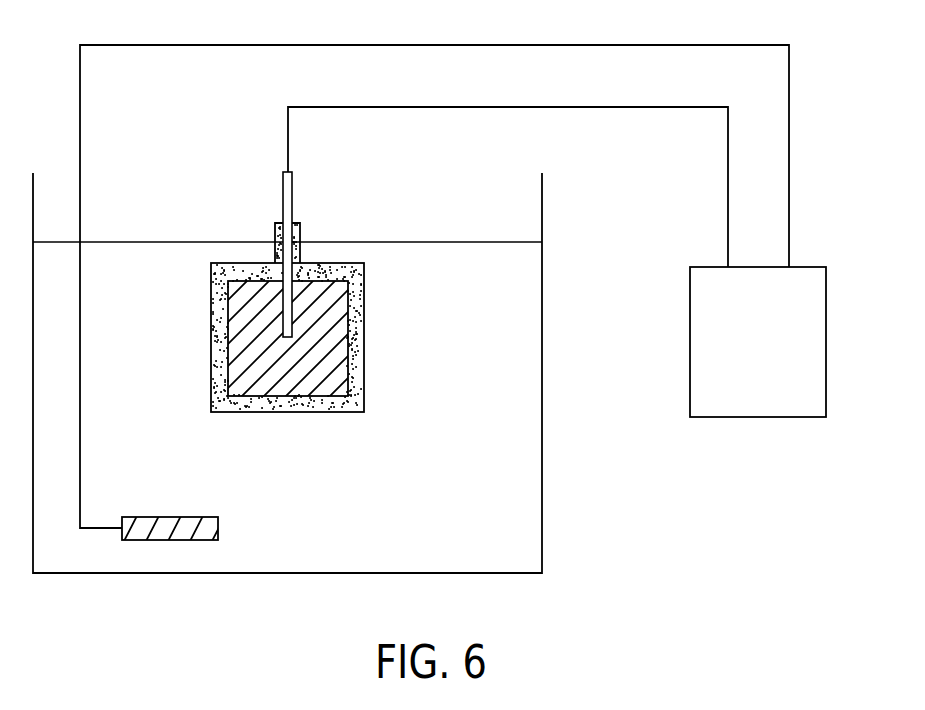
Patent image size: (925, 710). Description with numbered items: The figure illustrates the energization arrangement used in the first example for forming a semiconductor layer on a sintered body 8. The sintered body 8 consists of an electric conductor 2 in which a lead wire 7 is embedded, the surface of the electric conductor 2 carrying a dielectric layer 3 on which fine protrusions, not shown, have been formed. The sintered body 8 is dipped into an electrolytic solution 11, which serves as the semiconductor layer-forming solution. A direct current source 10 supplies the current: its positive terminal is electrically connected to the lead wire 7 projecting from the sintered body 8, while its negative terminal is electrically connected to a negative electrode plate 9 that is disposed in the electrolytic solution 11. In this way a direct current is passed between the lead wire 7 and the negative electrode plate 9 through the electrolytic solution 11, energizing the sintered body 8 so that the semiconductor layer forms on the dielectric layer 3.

The electric conductor 2 is at (242, 322).
The dielectric layer 3 is at (364, 282).
The lead wire 7 is at (283, 195).
The sintered body 8 is at (287, 321).
The negative electrode plate 9 is at (173, 542).
The direct current source 10 is at (827, 332).
The electrolytic solution 11 is at (500, 488).